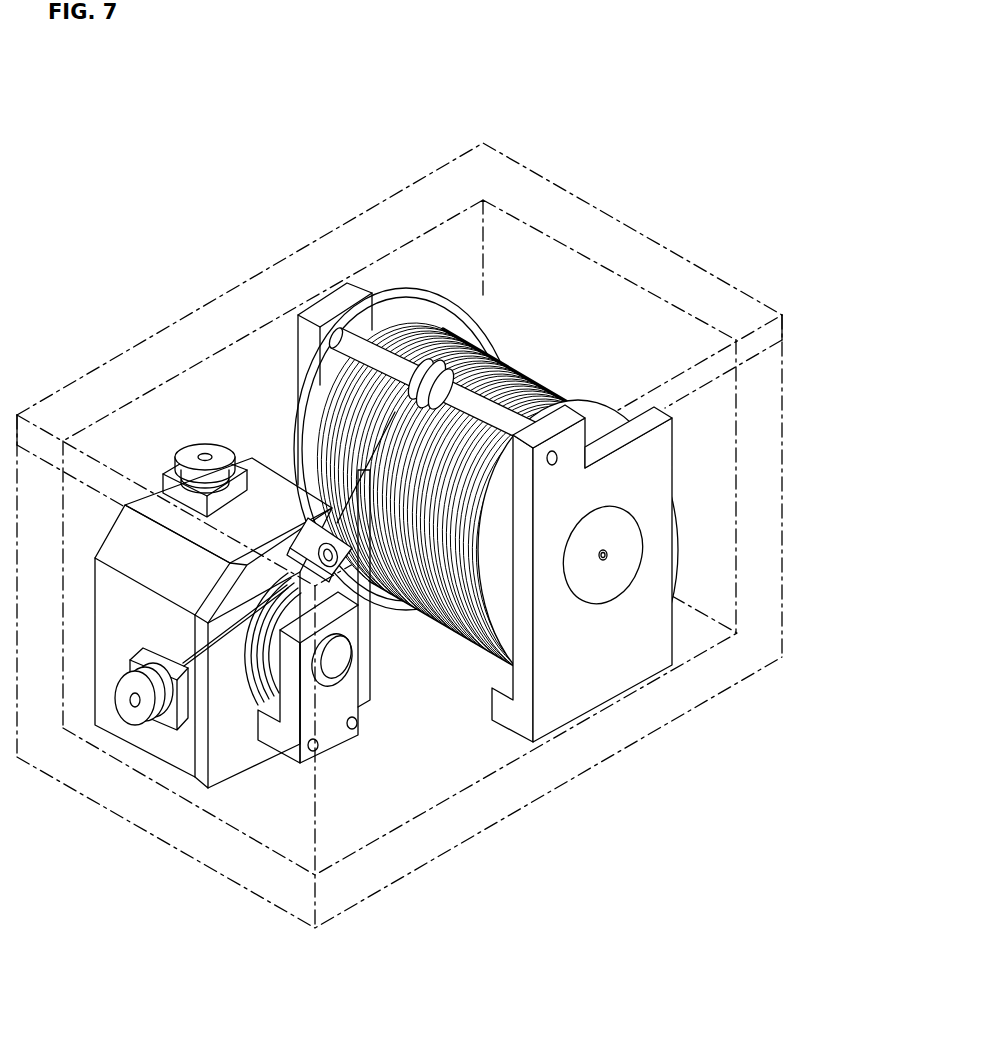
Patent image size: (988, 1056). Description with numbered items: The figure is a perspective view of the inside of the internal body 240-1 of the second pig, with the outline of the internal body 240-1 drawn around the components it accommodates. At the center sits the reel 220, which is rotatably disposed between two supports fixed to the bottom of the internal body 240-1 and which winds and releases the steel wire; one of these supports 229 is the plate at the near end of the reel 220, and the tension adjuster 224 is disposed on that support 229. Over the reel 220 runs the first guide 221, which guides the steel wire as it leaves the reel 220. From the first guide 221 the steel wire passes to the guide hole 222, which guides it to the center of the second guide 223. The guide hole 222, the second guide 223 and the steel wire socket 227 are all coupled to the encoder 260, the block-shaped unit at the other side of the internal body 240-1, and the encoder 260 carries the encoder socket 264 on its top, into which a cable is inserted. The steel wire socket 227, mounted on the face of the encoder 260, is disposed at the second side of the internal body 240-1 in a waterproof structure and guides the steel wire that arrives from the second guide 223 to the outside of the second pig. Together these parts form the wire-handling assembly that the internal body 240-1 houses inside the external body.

The internal body 240-1 is at (156, 326).
The reel 220 is at (509, 348).
The first guide 221 is at (335, 343).
The guide hole 222 is at (310, 542).
The second guide 223 is at (281, 764).
The tension adjuster 224 is at (610, 577).
The steel wire socket 227 is at (138, 736).
The support 229 is at (594, 652).
The encoder 260 is at (93, 643).
The encoder socket 264 is at (191, 446).